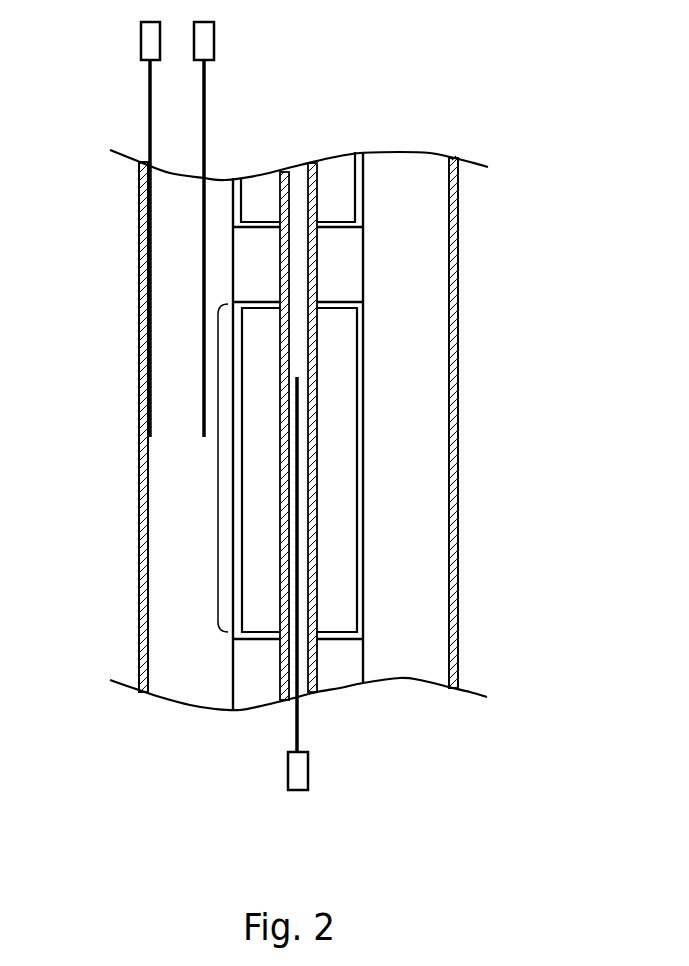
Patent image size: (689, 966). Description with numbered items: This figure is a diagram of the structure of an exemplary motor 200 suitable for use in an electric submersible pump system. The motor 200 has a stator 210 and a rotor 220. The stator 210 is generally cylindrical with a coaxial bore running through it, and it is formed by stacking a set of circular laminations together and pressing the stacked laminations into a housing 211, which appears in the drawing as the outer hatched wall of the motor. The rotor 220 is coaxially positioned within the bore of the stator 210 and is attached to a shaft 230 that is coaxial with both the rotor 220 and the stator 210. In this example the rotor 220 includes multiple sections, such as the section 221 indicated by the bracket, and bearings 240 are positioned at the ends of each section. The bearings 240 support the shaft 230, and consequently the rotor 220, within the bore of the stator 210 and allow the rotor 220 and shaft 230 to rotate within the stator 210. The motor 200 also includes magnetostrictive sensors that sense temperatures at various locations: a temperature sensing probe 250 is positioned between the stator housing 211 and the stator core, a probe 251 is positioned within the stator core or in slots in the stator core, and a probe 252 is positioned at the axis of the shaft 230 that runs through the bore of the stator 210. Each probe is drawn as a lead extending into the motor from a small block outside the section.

The motor 200 is at (490, 348).
The stator 210 is at (458, 218).
The housing 211 is at (452, 158).
The rotor 220 is at (355, 449).
The rotor section 221 is at (217, 472).
The shaft 230 is at (318, 590).
The bearing 240 is at (363, 275).
The temperature sensing probe 250 is at (141, 37).
The temperature sensing probe 251 is at (214, 35).
The temperature sensing probe 252 is at (288, 770).